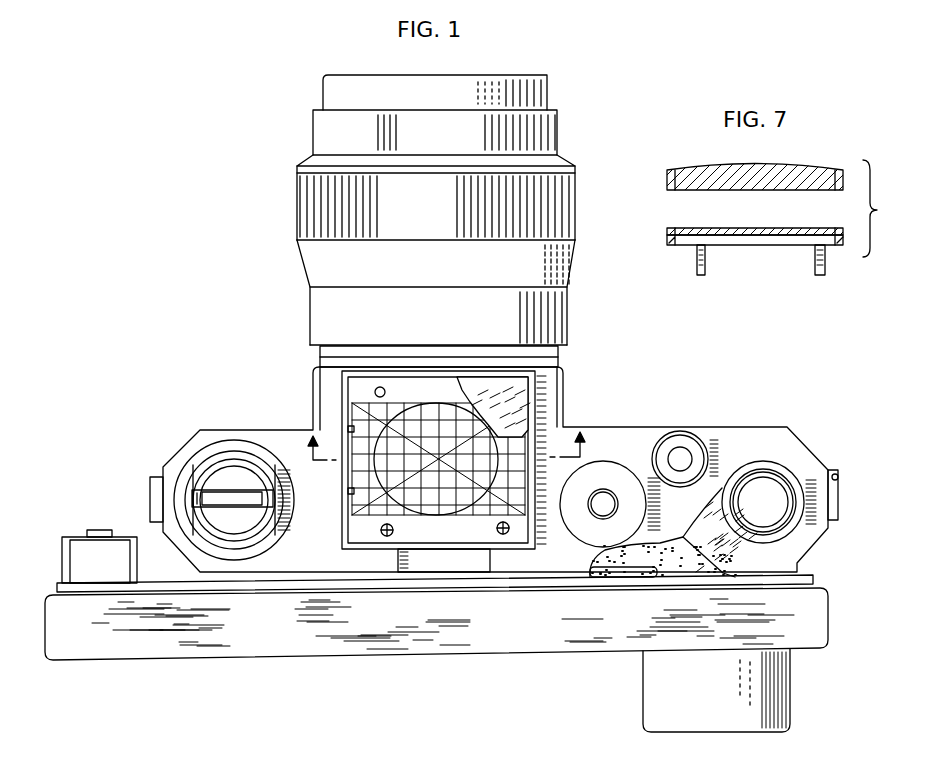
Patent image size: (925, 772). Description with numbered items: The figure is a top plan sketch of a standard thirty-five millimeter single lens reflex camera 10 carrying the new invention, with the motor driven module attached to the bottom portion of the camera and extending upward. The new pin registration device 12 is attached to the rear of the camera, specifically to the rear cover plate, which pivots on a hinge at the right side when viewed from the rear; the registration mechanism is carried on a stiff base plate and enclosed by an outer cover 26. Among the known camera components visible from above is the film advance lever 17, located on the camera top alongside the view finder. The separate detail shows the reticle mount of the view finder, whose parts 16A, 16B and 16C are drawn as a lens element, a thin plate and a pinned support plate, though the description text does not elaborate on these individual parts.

In FIG. 1, the single lens reflex camera 10 is at (232, 319).
In FIG. 1, the pin registration device 12 is at (230, 663).
In FIG. 1, the transparent cover plate 16A is at (520, 402).
In FIG. 7, the transparent cover plate 16A is at (772, 173).
In FIG. 1, the grid plate 16B is at (372, 430).
In FIG. 7, the grid plate 16B is at (687, 228).
In FIG. 1, the support plate 16C is at (360, 527).
In FIG. 7, the support plate 16C is at (793, 237).
In FIG. 1, the film advance lever 17 is at (747, 548).
In FIG. 1, the outer cover 26 is at (453, 637).